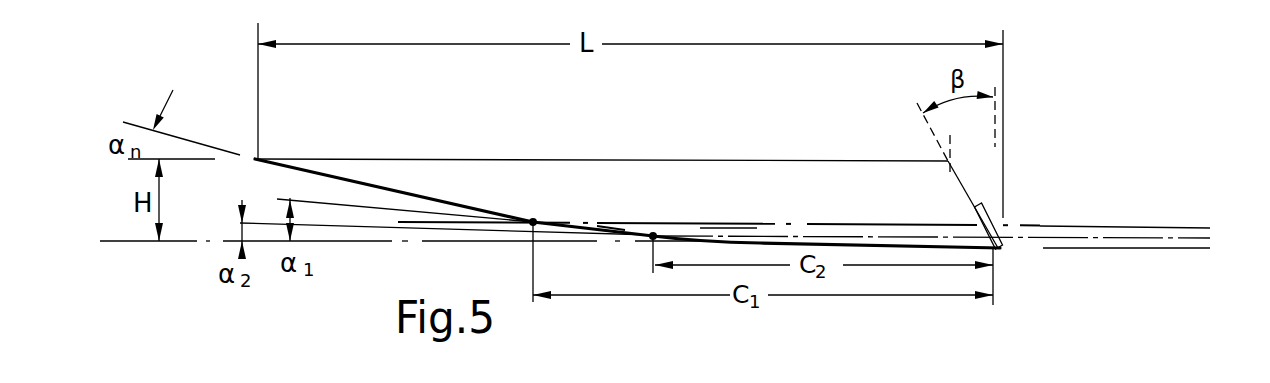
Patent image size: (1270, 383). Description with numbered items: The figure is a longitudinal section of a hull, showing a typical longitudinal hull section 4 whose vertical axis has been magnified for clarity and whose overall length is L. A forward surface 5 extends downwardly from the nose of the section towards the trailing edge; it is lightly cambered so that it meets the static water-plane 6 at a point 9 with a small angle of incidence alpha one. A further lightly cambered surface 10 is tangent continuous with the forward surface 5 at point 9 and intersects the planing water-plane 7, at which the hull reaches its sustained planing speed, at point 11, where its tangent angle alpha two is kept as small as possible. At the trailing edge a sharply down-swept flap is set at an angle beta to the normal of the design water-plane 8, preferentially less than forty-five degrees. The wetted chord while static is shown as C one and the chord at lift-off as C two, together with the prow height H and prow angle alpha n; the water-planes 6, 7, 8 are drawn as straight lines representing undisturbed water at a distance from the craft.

The longitudinal hull section 4 is at (613, 173).
The forward surface 5 is at (325, 175).
The static water-plane 6 is at (1127, 227).
The planing water-plane 7 is at (1190, 237).
The design water-plane 8 is at (1195, 249).
The point of intersection with the static water-plane 9 is at (530, 219).
The further lightly cambered surface 10 is at (613, 228).
The point of intersection with the planing water-plane 11 is at (656, 233).